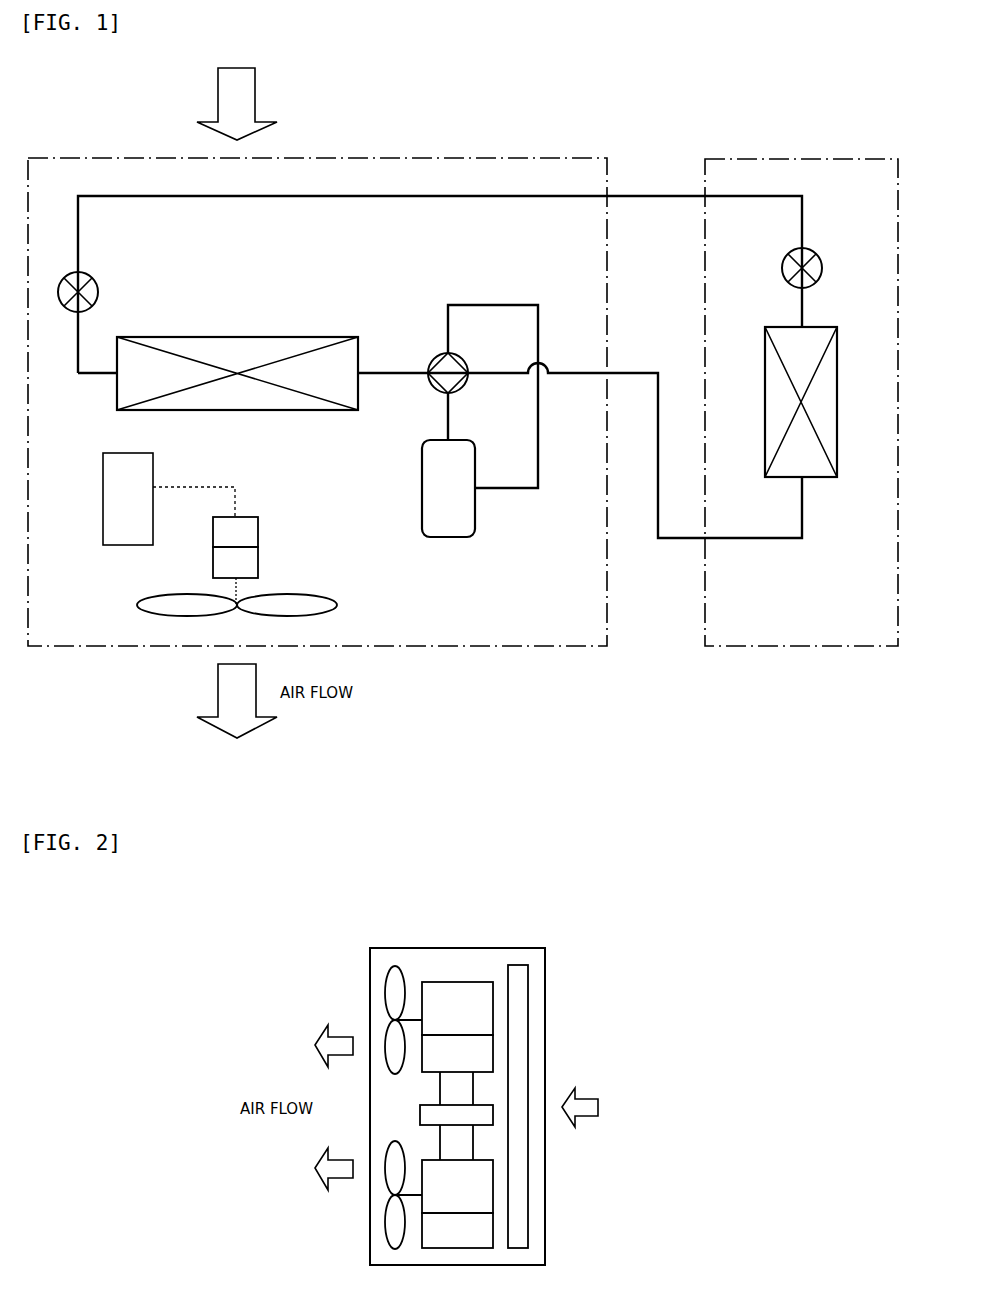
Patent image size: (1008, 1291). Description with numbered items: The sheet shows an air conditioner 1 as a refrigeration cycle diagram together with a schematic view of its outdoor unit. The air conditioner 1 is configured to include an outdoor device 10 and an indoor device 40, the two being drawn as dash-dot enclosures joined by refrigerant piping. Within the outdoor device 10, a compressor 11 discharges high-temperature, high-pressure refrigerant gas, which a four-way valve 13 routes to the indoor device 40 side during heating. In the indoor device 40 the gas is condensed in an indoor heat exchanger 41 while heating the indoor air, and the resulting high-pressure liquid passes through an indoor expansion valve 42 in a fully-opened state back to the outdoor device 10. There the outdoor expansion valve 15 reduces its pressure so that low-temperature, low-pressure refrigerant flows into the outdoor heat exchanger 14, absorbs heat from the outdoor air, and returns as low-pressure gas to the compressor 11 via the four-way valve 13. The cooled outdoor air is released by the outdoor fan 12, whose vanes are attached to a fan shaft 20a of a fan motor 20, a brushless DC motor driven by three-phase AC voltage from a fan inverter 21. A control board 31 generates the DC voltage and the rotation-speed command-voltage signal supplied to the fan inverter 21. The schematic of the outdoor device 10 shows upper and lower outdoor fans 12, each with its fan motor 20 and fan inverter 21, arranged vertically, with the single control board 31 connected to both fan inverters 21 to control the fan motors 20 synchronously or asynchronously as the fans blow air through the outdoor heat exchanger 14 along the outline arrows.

In FIG. 1, the air conditioner 1 is at (60, 140).
In FIG. 1, the outdoor device 10 is at (513, 158).
In FIG. 1, the compressor 11 is at (475, 520).
In FIG. 1, the outdoor fan 12 is at (337, 602).
In FIG. 2, the outdoor fan 12 is at (385, 990).
In FIG. 1, the four-way valve 13 is at (437, 360).
In FIG. 1, the outdoor heat exchanger 14 is at (246, 337).
In FIG. 2, the outdoor heat exchanger 14 is at (518, 968).
In FIG. 1, the outdoor expansion valve 15 is at (92, 270).
In FIG. 1, the fan motor 20 is at (258, 562).
In FIG. 2, the fan motor 20 is at (458, 990).
In FIG. 1, the fan shaft 20a is at (235, 592).
In FIG. 2, the fan shaft 20a is at (412, 1010).
In FIG. 1, the fan inverter 21 is at (258, 530).
In FIG. 2, the fan inverter 21 is at (493, 1043).
In FIG. 1, the control board 31 is at (153, 470).
In FIG. 2, the control board 31 is at (493, 1099).
In FIG. 1, the indoor device 40 is at (815, 158).
In FIG. 1, the indoor heat exchanger 41 is at (822, 477).
In FIG. 1, the indoor expansion valve 42 is at (822, 266).